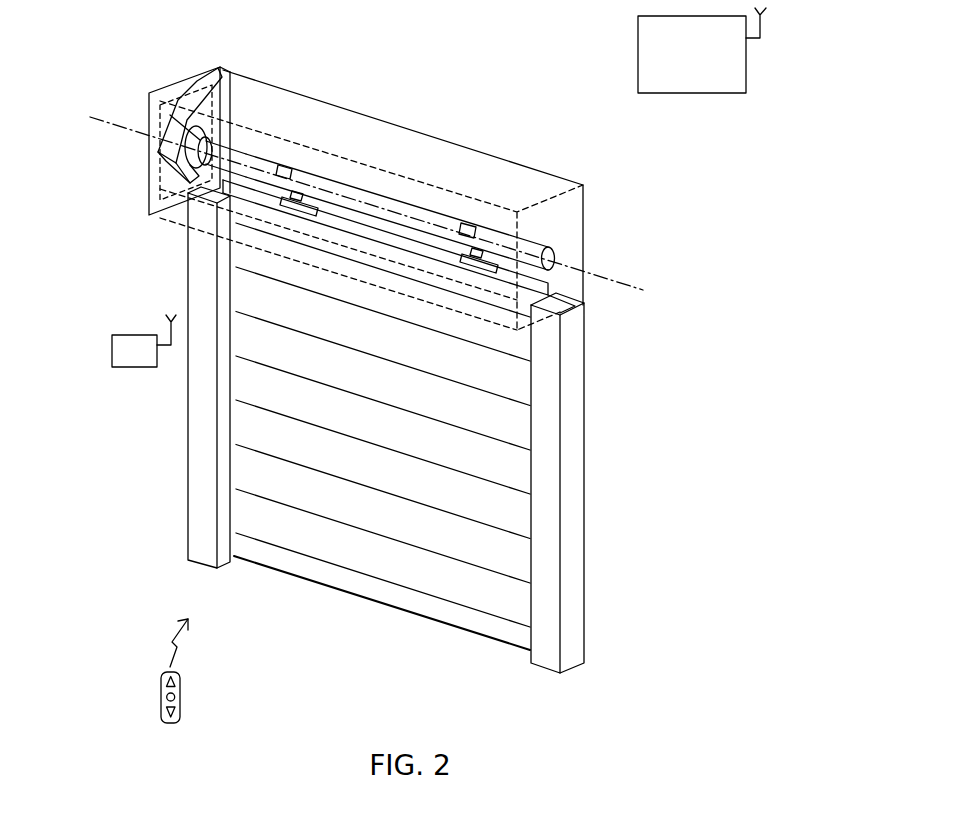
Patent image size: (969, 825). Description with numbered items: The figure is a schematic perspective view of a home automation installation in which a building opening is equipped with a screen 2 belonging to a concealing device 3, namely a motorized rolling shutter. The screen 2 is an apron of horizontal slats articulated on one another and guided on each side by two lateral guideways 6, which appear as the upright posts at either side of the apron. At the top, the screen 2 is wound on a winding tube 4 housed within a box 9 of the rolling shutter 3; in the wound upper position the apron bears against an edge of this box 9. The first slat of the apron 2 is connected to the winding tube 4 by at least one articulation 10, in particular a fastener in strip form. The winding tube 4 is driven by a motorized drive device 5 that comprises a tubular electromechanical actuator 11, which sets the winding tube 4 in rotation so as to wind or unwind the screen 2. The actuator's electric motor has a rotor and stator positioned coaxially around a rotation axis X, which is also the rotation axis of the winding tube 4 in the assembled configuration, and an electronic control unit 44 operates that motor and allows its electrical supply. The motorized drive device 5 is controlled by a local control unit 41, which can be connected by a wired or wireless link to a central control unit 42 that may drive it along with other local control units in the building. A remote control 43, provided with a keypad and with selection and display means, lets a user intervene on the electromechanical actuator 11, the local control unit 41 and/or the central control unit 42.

The screen 2 is at (392, 572).
The concealing device 3 is at (160, 459).
The winding tube 4 is at (352, 188).
The motorized drive device 5 is at (263, 142).
The lateral guideways 6 is at (207, 538).
The box 9 is at (508, 177).
The articulation 10 is at (287, 166).
The electromechanical actuator 11 is at (166, 178).
The local control unit 41 is at (130, 345).
The central control unit 42 is at (641, 48).
The remote control 43 is at (182, 698).
The electronic control unit 44 is at (217, 152).
The rotation axis X is at (613, 279).